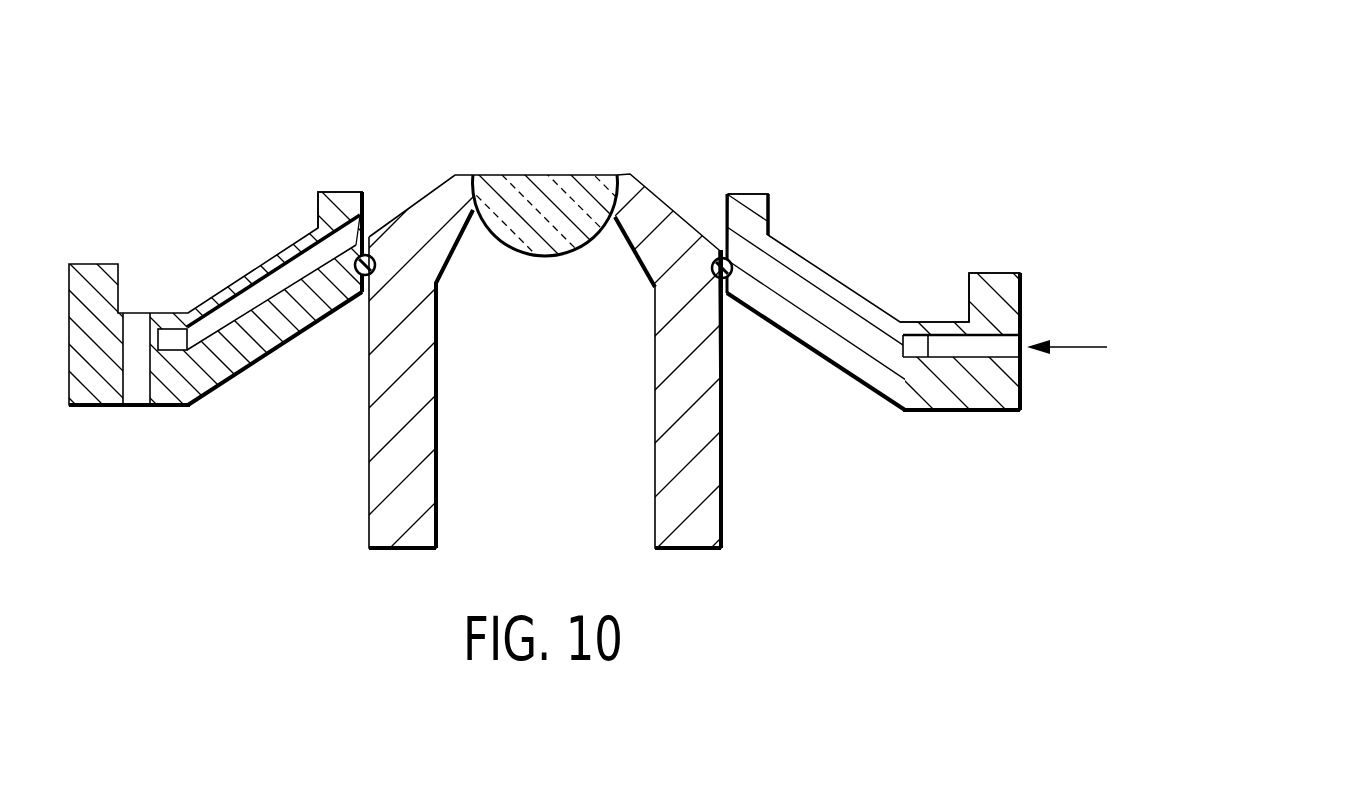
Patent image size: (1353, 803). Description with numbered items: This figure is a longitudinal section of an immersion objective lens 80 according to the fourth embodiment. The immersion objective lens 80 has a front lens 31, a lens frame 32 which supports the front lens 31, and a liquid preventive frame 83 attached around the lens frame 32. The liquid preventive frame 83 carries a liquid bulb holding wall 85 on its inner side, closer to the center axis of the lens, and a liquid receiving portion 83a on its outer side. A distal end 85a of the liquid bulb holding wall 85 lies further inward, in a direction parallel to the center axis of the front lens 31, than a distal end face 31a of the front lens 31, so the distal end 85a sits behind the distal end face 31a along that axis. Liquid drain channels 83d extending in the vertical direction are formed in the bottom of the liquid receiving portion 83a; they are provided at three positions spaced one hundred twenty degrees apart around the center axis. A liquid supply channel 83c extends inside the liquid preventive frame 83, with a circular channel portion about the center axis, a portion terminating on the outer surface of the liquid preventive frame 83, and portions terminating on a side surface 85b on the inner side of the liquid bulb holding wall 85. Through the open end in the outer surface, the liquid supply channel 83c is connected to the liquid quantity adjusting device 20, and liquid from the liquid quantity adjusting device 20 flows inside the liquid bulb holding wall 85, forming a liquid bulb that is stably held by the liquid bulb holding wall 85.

The immersion objective lens 80 is at (550, 401).
The front lens 31 is at (541, 180).
The distal end face of the front lens 31a is at (603, 176).
The lens frame 32 is at (723, 499).
The liquid preventive frame 83 is at (1022, 283).
The liquid receiving portion 83a is at (930, 288).
The liquid supply channel 83c is at (256, 280).
The liquid drain channel 83d is at (141, 407).
The liquid bulb holding wall 85 is at (770, 204).
The distal end of the liquid bulb holding wall 85a is at (330, 190).
The side surface on the inner side of the liquid bulb holding wall 85b is at (367, 193).
The liquid quantity adjusting device 20 is at (1182, 347).